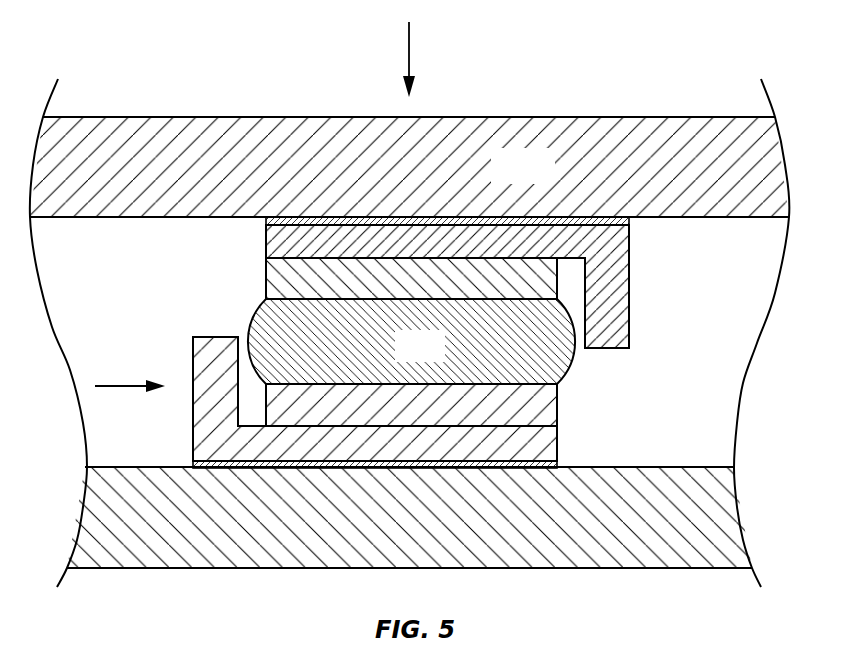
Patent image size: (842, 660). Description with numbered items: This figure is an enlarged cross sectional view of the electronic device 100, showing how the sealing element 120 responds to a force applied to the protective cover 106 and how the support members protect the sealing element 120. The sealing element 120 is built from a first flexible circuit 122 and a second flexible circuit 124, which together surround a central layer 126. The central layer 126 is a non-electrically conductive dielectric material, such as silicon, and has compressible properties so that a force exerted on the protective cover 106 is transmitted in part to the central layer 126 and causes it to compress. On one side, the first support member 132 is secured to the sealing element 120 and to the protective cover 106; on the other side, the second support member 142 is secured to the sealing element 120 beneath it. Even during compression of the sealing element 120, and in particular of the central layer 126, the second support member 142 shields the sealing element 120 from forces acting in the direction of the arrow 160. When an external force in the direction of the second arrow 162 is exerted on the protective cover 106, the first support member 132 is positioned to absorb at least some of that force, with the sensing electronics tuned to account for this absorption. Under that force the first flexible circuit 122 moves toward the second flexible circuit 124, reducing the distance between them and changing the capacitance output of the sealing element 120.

The electronic device 100 is at (121, 90).
The protective cover 106 is at (548, 177).
The sealing element 120 is at (180, 281).
The first flexible circuit 122 is at (266, 259).
The second flexible circuit 124 is at (558, 412).
The central layer 126 is at (438, 357).
The first support member 132 is at (632, 317).
The second support member 142 is at (193, 365).
The arrow 160 is at (127, 386).
The second arrow 162 is at (408, 52).